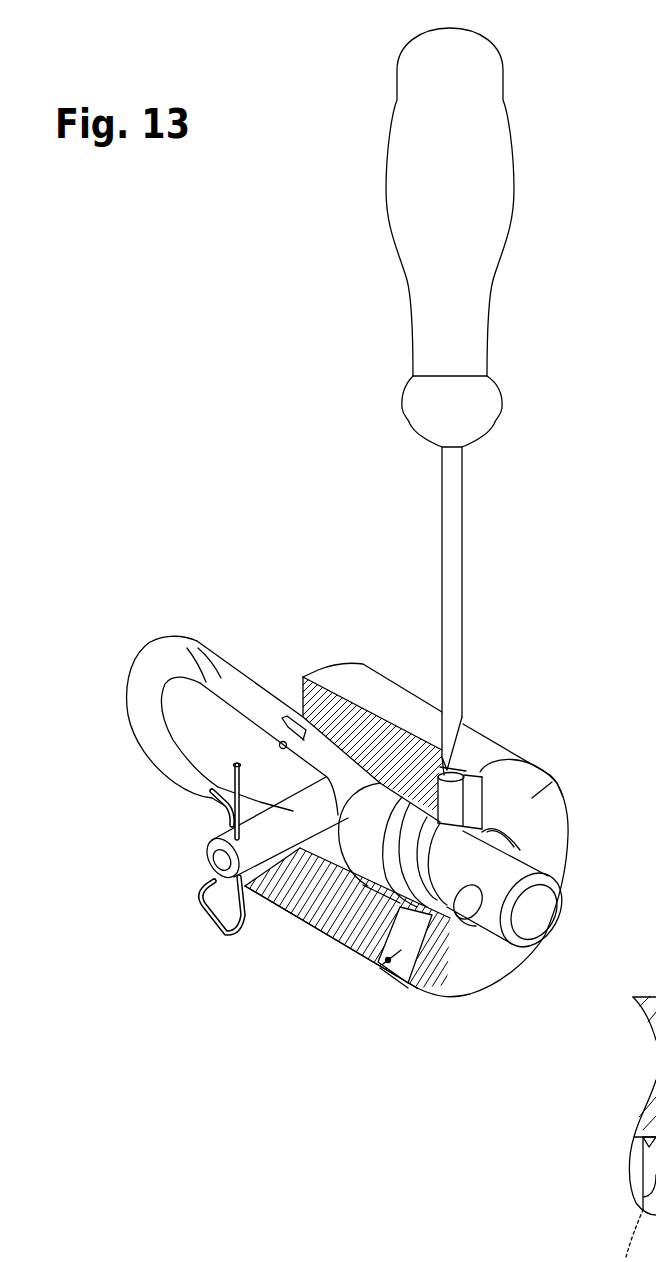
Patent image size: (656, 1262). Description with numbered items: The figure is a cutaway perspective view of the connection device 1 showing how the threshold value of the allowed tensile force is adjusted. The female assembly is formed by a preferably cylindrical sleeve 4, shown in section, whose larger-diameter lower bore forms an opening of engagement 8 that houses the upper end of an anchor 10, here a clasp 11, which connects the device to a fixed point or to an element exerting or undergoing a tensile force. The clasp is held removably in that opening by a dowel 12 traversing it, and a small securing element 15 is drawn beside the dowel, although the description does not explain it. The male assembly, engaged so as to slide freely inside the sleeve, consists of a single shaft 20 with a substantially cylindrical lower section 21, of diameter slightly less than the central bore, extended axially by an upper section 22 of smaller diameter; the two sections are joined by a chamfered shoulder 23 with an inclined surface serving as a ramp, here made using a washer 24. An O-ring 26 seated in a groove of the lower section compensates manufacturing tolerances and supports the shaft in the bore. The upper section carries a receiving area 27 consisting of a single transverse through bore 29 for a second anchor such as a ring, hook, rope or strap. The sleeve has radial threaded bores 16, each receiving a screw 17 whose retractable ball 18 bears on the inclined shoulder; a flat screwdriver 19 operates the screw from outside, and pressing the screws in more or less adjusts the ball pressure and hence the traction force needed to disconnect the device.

The connection device 1 is at (253, 1033).
The sleeve 4 is at (323, 665).
The opening of engagement 8 is at (313, 850).
The anchor 10 is at (153, 653).
The clasp 11 is at (153, 653).
The dowel 12 is at (210, 868).
The securing clip 15 is at (200, 912).
The threaded bores 16 is at (403, 990).
The screw 17 is at (400, 952).
The ball 18 is at (438, 925).
The flat screwdriver 19 is at (463, 532).
The shaft 20 is at (547, 934).
The lower section 21 is at (378, 795).
The upper section 22 is at (503, 865).
The shoulder 23 is at (425, 842).
The washer 24 is at (400, 873).
The O-ring 26 is at (373, 843).
The receiving area 27 is at (468, 912).
The transverse through bore 29 is at (468, 912).